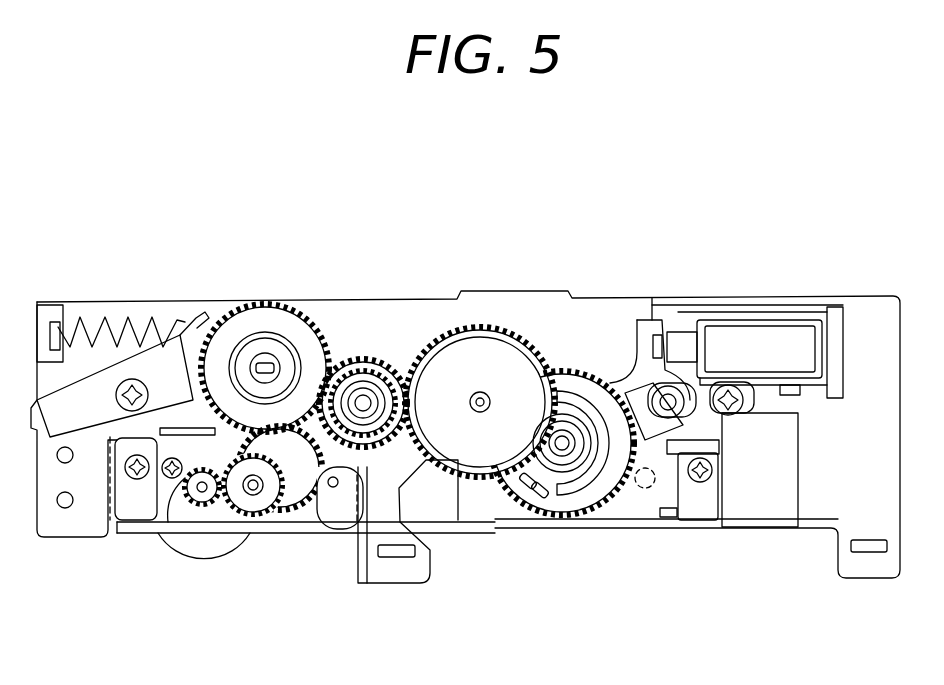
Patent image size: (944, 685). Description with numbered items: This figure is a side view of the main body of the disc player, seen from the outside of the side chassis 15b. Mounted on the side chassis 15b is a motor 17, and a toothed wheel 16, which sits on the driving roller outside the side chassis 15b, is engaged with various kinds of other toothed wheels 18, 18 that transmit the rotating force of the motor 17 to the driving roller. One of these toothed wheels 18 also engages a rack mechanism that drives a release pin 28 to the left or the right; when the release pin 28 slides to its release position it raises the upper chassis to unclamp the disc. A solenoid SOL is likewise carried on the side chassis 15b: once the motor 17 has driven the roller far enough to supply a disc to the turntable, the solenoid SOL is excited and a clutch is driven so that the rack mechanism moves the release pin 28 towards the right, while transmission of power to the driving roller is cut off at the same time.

The side chassis 15b is at (624, 305).
The toothed wheel 16 is at (270, 303).
The motor 17 is at (168, 542).
The toothed wheels 18 is at (387, 340).
The release pin 28 is at (642, 493).
The solenoid SOL is at (770, 335).